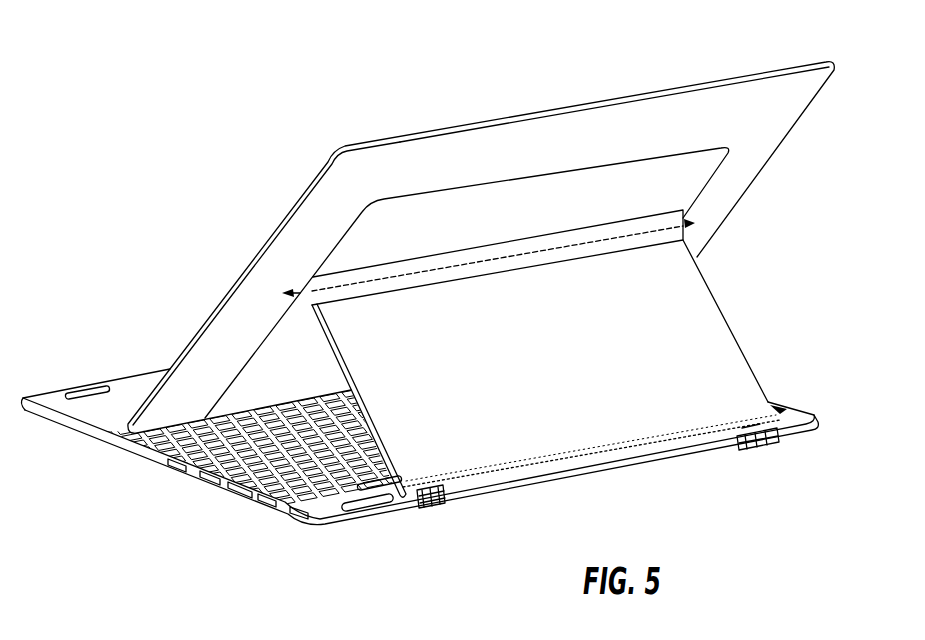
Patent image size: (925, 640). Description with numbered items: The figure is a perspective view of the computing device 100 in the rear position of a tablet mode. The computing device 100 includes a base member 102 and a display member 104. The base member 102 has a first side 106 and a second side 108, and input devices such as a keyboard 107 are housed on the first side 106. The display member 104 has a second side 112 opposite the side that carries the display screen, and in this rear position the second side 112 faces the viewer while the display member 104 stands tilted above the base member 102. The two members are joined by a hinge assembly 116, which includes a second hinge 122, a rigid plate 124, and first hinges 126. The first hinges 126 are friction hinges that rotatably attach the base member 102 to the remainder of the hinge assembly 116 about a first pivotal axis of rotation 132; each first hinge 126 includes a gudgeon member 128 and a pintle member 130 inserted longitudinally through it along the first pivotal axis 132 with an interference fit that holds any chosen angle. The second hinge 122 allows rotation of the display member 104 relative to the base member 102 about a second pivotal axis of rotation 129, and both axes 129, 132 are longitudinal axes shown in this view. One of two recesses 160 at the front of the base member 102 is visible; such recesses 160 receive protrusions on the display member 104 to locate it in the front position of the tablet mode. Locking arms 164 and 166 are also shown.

The computing device 100 is at (161, 70).
The base member 102 is at (238, 270).
The display member 104 is at (330, 153).
The first side 106 is at (790, 410).
The keyboard 107 is at (270, 494).
The second side 108 is at (68, 430).
The second side 112 is at (556, 101).
The hinge assembly 116 is at (737, 315).
The second hinge 122 is at (692, 230).
The rigid plate 124 is at (345, 383).
The first hinges 126 is at (765, 435).
The gudgeon member 128 is at (418, 503).
The second pivotal axis of rotation 129 is at (417, 268).
The pintle member 130 is at (433, 506).
The first pivotal axis of rotation 132 is at (507, 497).
The recesses 160 is at (90, 388).
The locking arm 164 is at (430, 490).
The locking arm 166 is at (748, 430).